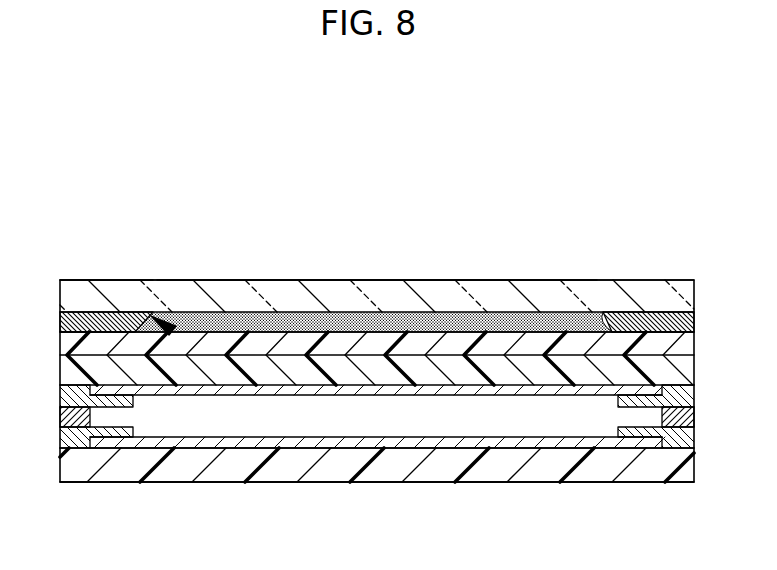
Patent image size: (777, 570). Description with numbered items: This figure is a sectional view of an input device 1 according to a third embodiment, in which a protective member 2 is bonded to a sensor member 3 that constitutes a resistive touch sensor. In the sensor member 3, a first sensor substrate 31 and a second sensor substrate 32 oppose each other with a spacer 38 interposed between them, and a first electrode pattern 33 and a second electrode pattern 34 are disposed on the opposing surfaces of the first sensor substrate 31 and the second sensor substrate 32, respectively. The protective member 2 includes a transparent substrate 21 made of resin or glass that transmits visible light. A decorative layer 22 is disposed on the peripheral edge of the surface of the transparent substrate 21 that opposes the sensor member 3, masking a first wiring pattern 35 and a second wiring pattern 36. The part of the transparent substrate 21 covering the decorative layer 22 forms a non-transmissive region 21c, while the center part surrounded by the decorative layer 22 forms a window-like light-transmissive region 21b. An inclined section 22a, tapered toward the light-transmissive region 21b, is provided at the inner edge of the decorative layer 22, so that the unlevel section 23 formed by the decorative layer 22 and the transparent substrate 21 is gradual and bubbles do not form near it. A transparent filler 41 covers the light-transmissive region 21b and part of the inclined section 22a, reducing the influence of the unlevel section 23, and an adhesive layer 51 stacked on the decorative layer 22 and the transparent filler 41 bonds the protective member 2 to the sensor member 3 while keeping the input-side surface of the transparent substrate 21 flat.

The input device 1 is at (497, 150).
The protective member 2 is at (706, 197).
The transparent substrate 21 is at (683, 280).
The light-transmissive region 21b is at (597, 259).
The non-transmissive region 21c is at (153, 261).
The decorative layer 22 is at (658, 312).
The inclined section 22a is at (593, 327).
The unlevel section 23 is at (168, 333).
The sensor member 3 is at (702, 482).
The first sensor substrate 31 is at (151, 377).
The second sensor substrate 32 is at (371, 474).
The first electrode pattern 33 is at (447, 392).
The second electrode pattern 34 is at (545, 450).
The first wiring pattern 35 is at (64, 392).
The second wiring pattern 36 is at (77, 443).
The spacer 38 is at (679, 420).
The transparent filler 41 is at (218, 333).
The adhesive layer 51 is at (260, 348).